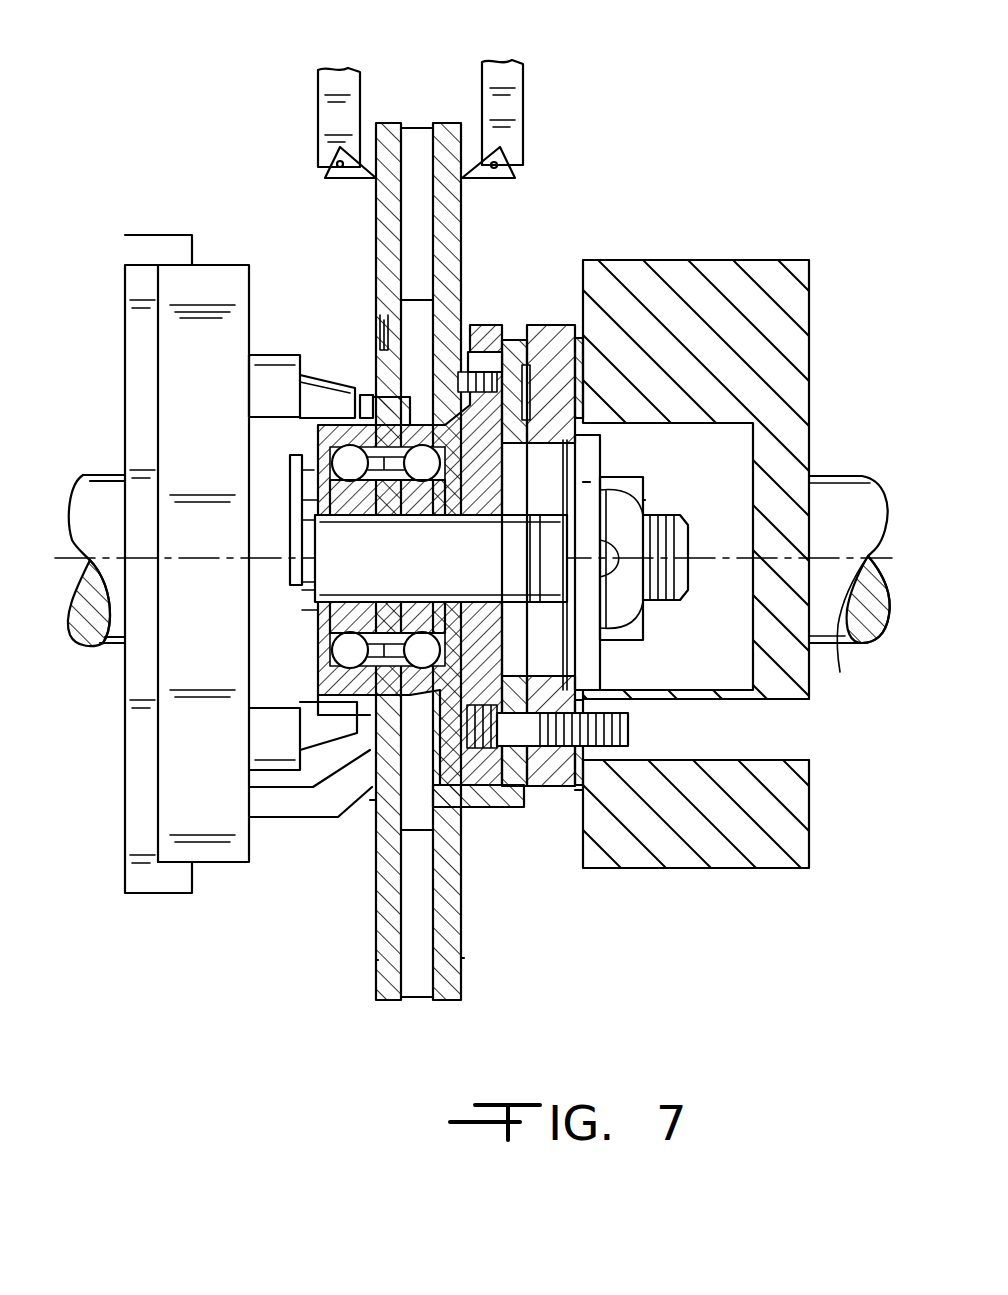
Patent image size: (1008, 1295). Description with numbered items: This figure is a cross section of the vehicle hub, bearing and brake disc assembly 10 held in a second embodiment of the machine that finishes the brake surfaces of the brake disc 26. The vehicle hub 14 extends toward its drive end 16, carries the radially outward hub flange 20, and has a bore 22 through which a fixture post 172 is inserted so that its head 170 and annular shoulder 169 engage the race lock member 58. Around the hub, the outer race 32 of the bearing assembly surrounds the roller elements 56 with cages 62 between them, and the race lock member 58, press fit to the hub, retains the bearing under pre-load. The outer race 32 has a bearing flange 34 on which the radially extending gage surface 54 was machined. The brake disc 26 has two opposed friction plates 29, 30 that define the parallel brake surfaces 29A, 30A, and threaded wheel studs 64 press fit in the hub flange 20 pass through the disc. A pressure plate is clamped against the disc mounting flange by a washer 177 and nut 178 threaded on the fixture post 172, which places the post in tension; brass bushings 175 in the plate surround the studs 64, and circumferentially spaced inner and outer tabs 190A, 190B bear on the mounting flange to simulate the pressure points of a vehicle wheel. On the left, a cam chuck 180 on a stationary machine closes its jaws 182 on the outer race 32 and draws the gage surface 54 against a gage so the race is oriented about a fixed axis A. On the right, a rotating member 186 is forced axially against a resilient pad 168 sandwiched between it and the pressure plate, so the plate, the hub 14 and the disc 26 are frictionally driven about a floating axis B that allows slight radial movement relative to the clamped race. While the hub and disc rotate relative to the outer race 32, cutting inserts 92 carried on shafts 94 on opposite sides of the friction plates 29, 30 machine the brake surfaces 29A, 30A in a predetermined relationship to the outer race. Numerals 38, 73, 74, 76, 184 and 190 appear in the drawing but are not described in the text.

The vehicle hub, bearing and brake disc assembly 10 is at (660, 190).
The vehicle hub 14 is at (590, 482).
The drive end 16 is at (300, 620).
The hub flange 20 is at (480, 355).
The bore 22 is at (472, 596).
The brake disc 26 is at (452, 112).
The friction plate 29 is at (390, 1004).
The brake surface 29A is at (375, 960).
The friction plate 30 is at (450, 1004).
The brake surface 30A is at (464, 958).
The outer race 32 is at (372, 400).
The bearing flange 34 is at (372, 800).
The hub wall 38 is at (468, 790).
The gage surface 54 is at (333, 790).
The roller elements 56 is at (442, 645).
The race lock member 58 is at (290, 495).
The separators or cages 62 is at (360, 635).
The threaded wheel studs 64 is at (618, 700).
The spacer 73 is at (590, 645).
The plate 74 is at (590, 410).
The shaft shoulder 76 is at (520, 470).
The cutting inserts 92 is at (345, 170).
The shafts 94 is at (325, 95).
The resilient pad 168 is at (580, 340).
The annular shoulder 169 is at (295, 530).
The head 170 is at (292, 590).
The fixture post 172 is at (690, 540).
The bushings 175 is at (576, 800).
The washer 177 is at (659, 568).
The nut 178 is at (640, 500).
The cam chuck 180 is at (205, 285).
The jaws 182 is at (318, 375).
The outer plate 184 is at (270, 820).
The rotating member 186 is at (808, 275).
The housing block lower 190 is at (767, 862).
The inner tabs 190A is at (580, 448).
The outer tabs 190B is at (540, 330).
The fixed axis A is at (104, 542).
The floating axis B is at (849, 592).